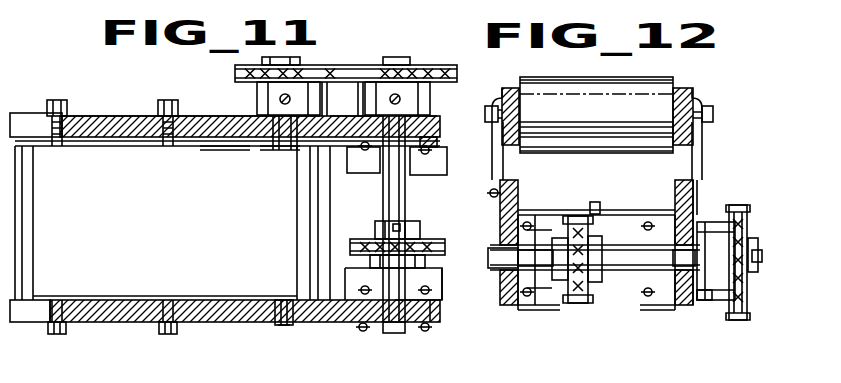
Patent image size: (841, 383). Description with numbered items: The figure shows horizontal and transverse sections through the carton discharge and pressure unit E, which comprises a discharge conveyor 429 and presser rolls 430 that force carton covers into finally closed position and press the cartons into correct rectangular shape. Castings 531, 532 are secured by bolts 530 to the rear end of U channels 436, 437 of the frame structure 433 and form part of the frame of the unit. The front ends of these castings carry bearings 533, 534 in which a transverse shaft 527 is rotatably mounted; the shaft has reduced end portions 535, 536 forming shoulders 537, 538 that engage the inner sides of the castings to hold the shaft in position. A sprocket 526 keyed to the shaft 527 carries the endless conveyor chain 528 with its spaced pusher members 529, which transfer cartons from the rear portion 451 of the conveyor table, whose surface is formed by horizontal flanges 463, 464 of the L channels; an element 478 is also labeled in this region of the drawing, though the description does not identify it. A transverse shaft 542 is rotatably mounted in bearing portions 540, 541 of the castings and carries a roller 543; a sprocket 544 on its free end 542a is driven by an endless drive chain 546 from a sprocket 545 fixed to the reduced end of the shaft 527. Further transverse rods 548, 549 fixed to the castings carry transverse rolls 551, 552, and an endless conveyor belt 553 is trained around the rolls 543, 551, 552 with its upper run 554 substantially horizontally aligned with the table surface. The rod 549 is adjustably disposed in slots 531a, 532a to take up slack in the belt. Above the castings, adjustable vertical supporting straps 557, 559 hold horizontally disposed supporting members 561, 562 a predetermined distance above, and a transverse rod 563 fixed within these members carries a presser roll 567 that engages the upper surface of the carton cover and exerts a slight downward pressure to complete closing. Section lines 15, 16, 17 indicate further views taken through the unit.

In FIG. 11, the casting 531 is at (232, 103).
In FIG. 12, the casting 531 is at (690, 188).
In FIG. 11, the slot 531a is at (28, 123).
In FIG. 11, the casting 532 is at (200, 322).
In FIG. 12, the casting 532 is at (500, 188).
In FIG. 11, the slot 532a is at (38, 325).
In FIG. 11, the transverse rod 549 is at (67, 118).
In FIG. 11, the transverse rod 548 is at (157, 120).
In FIG. 11, the transverse roll 552 is at (52, 146).
In FIG. 11, the transverse roll 551 is at (150, 146).
In FIG. 11, the endless conveyor belt 553 is at (170, 222).
In FIG. 12, the endless conveyor belt 553 is at (538, 280).
In FIG. 11, the upper run 554 is at (234, 222).
In FIG. 12, the upper run 554 is at (590, 210).
In FIG. 11, the discharge conveyor 429 is at (137, 255).
In FIG. 12, the discharge conveyor 429 is at (630, 212).
In FIG. 11, the bearing portion 541 is at (280, 298).
In FIG. 11, the transverse shaft 542 is at (285, 328).
In FIG. 12, the transverse shaft 542 is at (758, 248).
In FIG. 11, the endless drive chain 546 is at (435, 68).
In FIG. 12, the endless drive chain 546 is at (747, 322).
In FIG. 11, the free end of shaft 542a is at (300, 58).
In FIG. 11, the sprocket 545 is at (435, 97).
In FIG. 12, the sprocket 545 is at (722, 267).
In FIG. 11, the bearing 533 is at (372, 136).
In FIG. 12, the bearing 533 is at (714, 242).
In FIG. 11, the sprocket 544 is at (270, 100).
In FIG. 12, the sprocket 544 is at (717, 222).
In FIG. 11, the transverse shaft 527 is at (394, 333).
In FIG. 12, the transverse shaft 527 is at (635, 258).
In FIG. 11, the bolt 530 is at (437, 120).
In FIG. 12, the bolt 530 is at (497, 240).
In FIG. 11, the U channel 436 is at (440, 155).
In FIG. 12, the U channel 436 is at (684, 310).
In FIG. 11, the end portion of shaft 535 is at (405, 145).
In FIG. 12, the end portion of shaft 535 is at (687, 257).
In FIG. 11, the shoulder 537 is at (398, 140).
In FIG. 12, the shoulder 537 is at (595, 257).
In FIG. 11, the frame structure 433 is at (397, 171).
In FIG. 12, the frame structure 433 is at (663, 328).
In FIG. 11, the bearing portion 540 is at (285, 135).
In FIG. 11, the roller 543 is at (240, 146).
In FIG. 11, the sprocket 526 is at (378, 233).
In FIG. 12, the sprocket 526 is at (600, 242).
In FIG. 11, the pusher member 529 is at (405, 232).
In FIG. 12, the pusher member 529 is at (606, 210).
In FIG. 11, the endless conveyor chain 528 is at (430, 245).
In FIG. 12, the endless conveyor chain 528 is at (575, 305).
In FIG. 11, the shoulder 538 is at (392, 295).
In FIG. 12, the shoulder 538 is at (537, 257).
In FIG. 11, the U channel 437 is at (433, 291).
In FIG. 12, the U channel 437 is at (528, 332).
In FIG. 11, the rear portion of conveyor table 451 is at (437, 296).
In FIG. 12, the rear portion of conveyor table 451 is at (683, 297).
In FIG. 11, the bearing 534 is at (385, 327).
In FIG. 12, the bearing 534 is at (587, 259).
In FIG. 11, the end portion of shaft 536 is at (410, 330).
In FIG. 12, the end portion of shaft 536 is at (503, 258).
In FIG. 11, the section line 17 is at (394, 376).
In FIG. 11, the section line 16 is at (500, 376).
In FIG. 12, the section line 15 is at (508, 382).
In FIG. 11, the carton discharge and pressure unit E is at (190, 128).
In FIG. 12, the carton discharge and pressure unit E is at (631, 94).
In FIG. 12, the presser roll 430 is at (610, 116).
In FIG. 12, the presser roll 567 is at (585, 80).
In FIG. 12, the supporting member 562 is at (510, 88).
In FIG. 12, the supporting member 561 is at (690, 90).
In FIG. 12, the adjustable vertical supporting strap 557 is at (702, 149).
In FIG. 12, the transverse rod 563 is at (712, 115).
In FIG. 12, the adjustable vertical supporting strap 559 is at (496, 165).
In FIG. 12, the horizontal flange 463 is at (540, 210).
In FIG. 12, the shaft 478 is at (605, 210).
In FIG. 12, the horizontal flange 464 is at (656, 210).